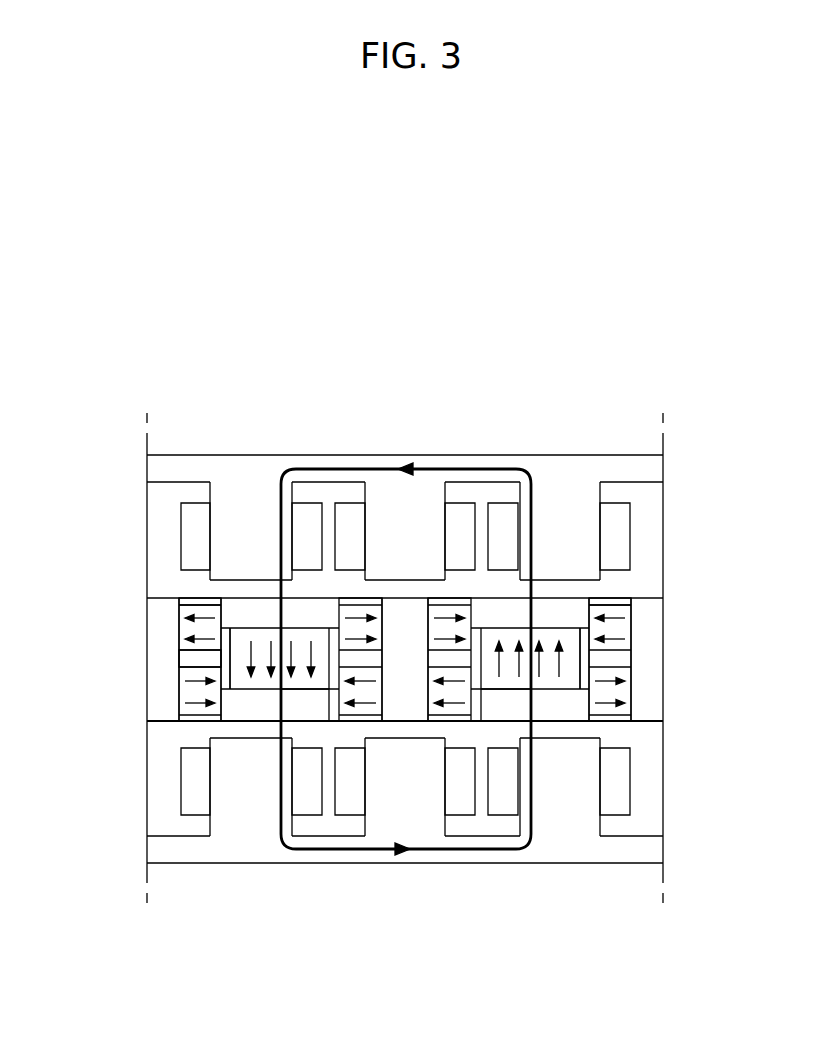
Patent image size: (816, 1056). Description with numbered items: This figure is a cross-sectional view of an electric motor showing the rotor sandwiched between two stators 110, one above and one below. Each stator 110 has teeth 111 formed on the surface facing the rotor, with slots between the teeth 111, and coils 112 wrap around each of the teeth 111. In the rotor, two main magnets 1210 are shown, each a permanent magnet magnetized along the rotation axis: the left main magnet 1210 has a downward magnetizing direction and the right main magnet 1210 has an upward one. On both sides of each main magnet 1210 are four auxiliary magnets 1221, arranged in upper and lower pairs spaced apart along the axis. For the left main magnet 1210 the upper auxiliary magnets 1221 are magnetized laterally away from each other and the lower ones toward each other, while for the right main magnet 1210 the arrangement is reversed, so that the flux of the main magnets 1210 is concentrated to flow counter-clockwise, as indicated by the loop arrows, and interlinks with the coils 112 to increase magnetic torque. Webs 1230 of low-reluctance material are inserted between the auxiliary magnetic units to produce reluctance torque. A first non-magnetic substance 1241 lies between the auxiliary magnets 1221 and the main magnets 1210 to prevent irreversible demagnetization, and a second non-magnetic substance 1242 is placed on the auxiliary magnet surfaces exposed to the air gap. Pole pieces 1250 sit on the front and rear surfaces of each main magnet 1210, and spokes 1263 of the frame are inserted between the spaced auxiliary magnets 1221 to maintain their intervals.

The stator 110 is at (441, 455).
The teeth 111 is at (245, 515).
The coils 112 is at (307, 503).
The main magnet 1210 is at (262, 631).
The auxiliary magnets 1221 is at (178, 634).
The web 1230 is at (413, 710).
The first non-magnetic substance 1241 is at (228, 690).
The second non-magnetic substance 1242 is at (178, 600).
The pole piece 1250 is at (317, 708).
The spoke 1263 is at (198, 668).